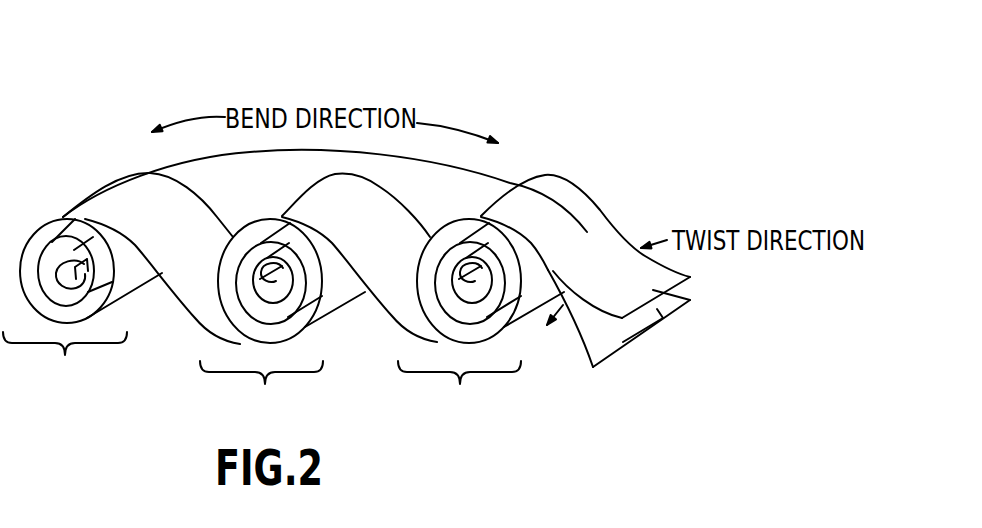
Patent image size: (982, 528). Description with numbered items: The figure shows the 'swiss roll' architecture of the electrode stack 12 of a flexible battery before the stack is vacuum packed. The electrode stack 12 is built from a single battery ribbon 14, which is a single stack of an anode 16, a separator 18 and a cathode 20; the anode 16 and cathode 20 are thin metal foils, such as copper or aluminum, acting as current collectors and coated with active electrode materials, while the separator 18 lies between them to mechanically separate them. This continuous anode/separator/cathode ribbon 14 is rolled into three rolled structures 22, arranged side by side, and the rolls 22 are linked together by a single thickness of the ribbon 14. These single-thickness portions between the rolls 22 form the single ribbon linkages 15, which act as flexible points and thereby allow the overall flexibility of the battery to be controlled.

The electrode stack 12 is at (126, 78).
The battery ribbon 14 is at (177, 302).
The single ribbon linkages 15 is at (238, 214).
The anode 16 is at (588, 352).
The separator 18 is at (627, 333).
The cathode 20 is at (671, 297).
The rolled structures 22 is at (283, 319).